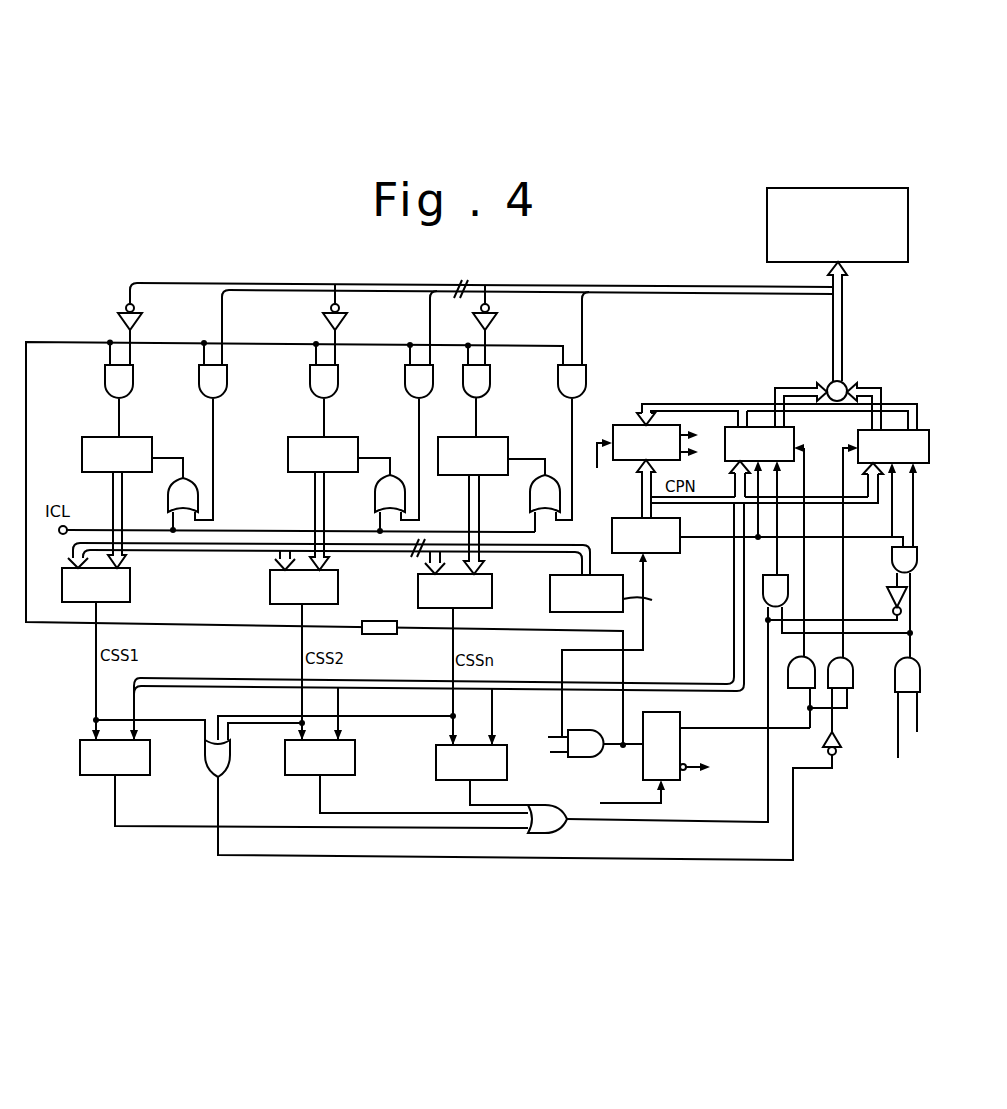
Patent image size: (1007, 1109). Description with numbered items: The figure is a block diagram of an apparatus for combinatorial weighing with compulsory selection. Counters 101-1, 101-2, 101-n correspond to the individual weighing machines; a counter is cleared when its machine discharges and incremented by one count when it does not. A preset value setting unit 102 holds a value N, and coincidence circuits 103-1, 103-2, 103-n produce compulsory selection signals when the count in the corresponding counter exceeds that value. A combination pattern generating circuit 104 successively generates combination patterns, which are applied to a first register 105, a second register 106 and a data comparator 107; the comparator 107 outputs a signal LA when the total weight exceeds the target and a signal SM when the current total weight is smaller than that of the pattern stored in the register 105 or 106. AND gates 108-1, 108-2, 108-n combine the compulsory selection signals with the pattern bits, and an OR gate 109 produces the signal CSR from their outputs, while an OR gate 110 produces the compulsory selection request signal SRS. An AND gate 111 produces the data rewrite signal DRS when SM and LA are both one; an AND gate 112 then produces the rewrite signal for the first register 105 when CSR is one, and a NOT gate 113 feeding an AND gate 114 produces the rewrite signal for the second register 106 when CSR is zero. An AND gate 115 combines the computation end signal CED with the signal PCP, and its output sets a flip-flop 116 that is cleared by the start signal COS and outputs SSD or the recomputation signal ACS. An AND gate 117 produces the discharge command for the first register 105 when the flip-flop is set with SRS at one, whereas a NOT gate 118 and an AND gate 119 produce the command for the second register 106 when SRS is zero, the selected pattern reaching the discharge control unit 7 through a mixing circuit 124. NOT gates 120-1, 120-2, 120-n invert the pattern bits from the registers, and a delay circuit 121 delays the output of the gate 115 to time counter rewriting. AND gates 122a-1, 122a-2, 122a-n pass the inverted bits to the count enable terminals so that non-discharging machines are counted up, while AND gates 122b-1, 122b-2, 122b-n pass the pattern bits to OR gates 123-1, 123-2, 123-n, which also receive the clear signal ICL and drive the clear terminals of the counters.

The discharge control unit 7 is at (908, 236).
The counter 101-1 is at (82, 437).
The counter 101-2 is at (288, 437).
The counter 101-n is at (510, 428).
The preset value setting unit 102 is at (550, 606).
The coincidence circuit 103-1 is at (130, 586).
The coincidence circuit 103-2 is at (338, 598).
The coincidence circuit 103-n is at (492, 580).
The combination pattern generating circuit 104 is at (668, 553).
The first register 105 is at (794, 441).
The second register 106 is at (929, 448).
The data comparator 107 is at (614, 425).
The AND gate 108-1 is at (80, 757).
The AND gate 108-2 is at (285, 757).
The AND gate 108-n is at (436, 758).
The OR gate 109 is at (560, 831).
The OR gate 110 is at (205, 758).
The AND gate 111 is at (920, 664).
The AND gate 112 is at (763, 585).
The NOT gate 113 is at (887, 597).
The AND gate 114 is at (917, 562).
The AND gate 115 is at (580, 730).
The flip-flop 116 is at (652, 712).
The AND gate 117 is at (790, 665).
The NOT gate 118 is at (841, 742).
The AND gate 119 is at (853, 670).
The NOT gate 120-1 is at (118, 319).
The NOT gate 120-2 is at (323, 318).
The NOT gate 120-n is at (473, 320).
The delay circuit 121 is at (380, 634).
The AND gate 122a-1 is at (105, 373).
The AND gate 122b-1 is at (199, 372).
The AND gate 122a-2 is at (310, 378).
The AND gate 122b-2 is at (405, 388).
The AND gate 122a-n is at (463, 388).
The AND gate 122b-n is at (558, 385).
The OR gate 123-1 is at (168, 498).
The OR gate 123-2 is at (375, 500).
The OR gate 123-n is at (530, 500).
The mixing circuit 124 is at (846, 386).